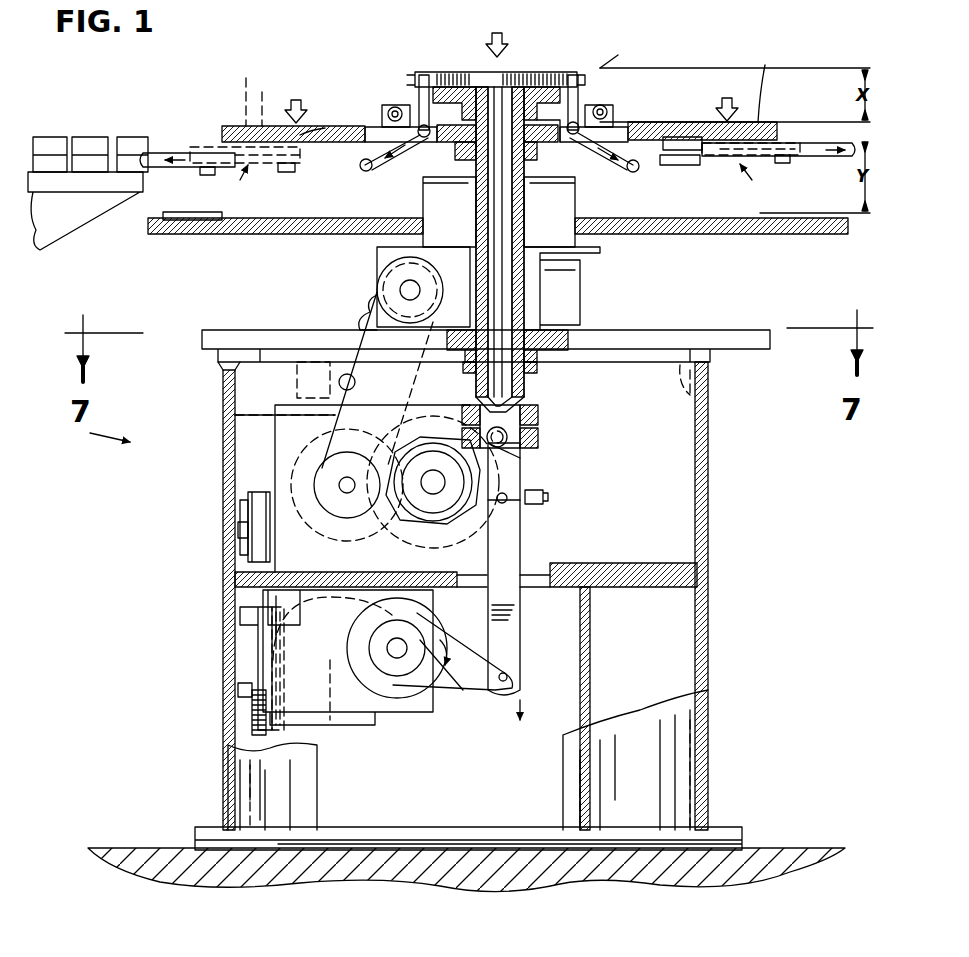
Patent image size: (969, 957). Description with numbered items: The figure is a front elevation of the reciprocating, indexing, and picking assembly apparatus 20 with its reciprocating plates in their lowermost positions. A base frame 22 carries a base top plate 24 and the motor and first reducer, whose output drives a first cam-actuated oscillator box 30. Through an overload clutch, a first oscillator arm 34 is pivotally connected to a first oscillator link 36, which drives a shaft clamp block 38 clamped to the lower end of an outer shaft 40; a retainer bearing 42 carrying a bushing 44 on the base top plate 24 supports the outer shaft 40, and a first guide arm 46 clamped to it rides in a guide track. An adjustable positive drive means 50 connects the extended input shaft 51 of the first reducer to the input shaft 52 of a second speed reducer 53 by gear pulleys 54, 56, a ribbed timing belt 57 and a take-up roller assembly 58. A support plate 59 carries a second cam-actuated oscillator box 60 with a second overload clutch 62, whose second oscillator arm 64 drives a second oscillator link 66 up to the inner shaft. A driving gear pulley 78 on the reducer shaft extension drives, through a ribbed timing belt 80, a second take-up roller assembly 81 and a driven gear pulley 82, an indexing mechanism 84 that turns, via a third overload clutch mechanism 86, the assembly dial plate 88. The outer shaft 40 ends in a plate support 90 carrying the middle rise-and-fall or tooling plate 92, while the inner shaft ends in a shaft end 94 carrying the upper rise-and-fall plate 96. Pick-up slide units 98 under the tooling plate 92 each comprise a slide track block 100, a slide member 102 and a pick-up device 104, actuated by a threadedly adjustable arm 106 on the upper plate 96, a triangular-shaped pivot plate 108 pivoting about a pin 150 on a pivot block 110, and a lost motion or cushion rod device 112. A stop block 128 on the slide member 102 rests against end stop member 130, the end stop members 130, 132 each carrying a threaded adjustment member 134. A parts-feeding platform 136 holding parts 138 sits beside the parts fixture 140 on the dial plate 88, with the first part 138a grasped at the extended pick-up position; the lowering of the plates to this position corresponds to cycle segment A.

The reciprocating, indexing, and picking assembly apparatus 20 is at (90, 434).
The base frame 22 is at (222, 375).
The base top plate 24 is at (748, 345).
The first cam-actuated oscillator box 30 is at (505, 548).
The first oscillator arm 34 is at (390, 525).
The first oscillator link 36 is at (520, 470).
The shaft clamp block 38 is at (540, 430).
The outer shaft 40 is at (545, 275).
The retainer bearing 42 is at (575, 340).
The bushing 44 is at (520, 380).
The first guide arm 46 is at (470, 405).
The adjustable positive drive means 50 is at (238, 505).
The extended input shaft 51 is at (236, 522).
The input shaft 52 is at (236, 688).
The second speed reducer 53 is at (330, 725).
The gear pulley 54 is at (246, 495).
The gear pulley 56 is at (252, 725).
The ribbed timing belt 57 is at (272, 640).
The take-up roller assembly 58 is at (240, 618).
The support plate 59 is at (625, 538).
The second cam-actuated oscillator box 60 is at (428, 712).
The second overload clutch 62 is at (395, 700).
The second oscillator arm 64 is at (480, 690).
The second oscillator link 66 is at (520, 612).
The driving gear pulley 78 is at (320, 475).
The ribbed timing belt 80 is at (235, 415).
The second take-up roller assembly 81 is at (320, 380).
The driven gear pulley 82 is at (380, 300).
The indexing mechanism 84 is at (377, 262).
The third overload clutch mechanism 86 is at (612, 185).
The assembly dial plate 88 is at (838, 200).
The plate support 90 is at (540, 150).
The middle rise-and-fall or tooling plate 92 is at (760, 83).
The shaft end 94 is at (560, 75).
The upper rise-and-fall plate 96 is at (525, 72).
The pick-up slide unit 98 is at (500, 185).
The slide track block 100 is at (312, 126).
The slide member 102 is at (205, 147).
The pick-up device 104 is at (185, 153).
The threadedly adjustable arm 106 is at (619, 55).
The triangular-shaped pivot plate 108 is at (378, 168).
The pivot block 110 is at (418, 110).
The lost motion or cushion rod device 112 is at (673, 168).
The stop block 128 is at (274, 99).
The end stop member 130 is at (243, 87).
The end stop member 132 is at (320, 126).
The threaded adjustment member 134 is at (235, 170).
The parts-feeding platform 136 is at (95, 190).
The parts 138 is at (52, 137).
The first part 138a is at (128, 137).
The parts fixture 140 is at (200, 212).
The pin 150 is at (393, 105).
The segment A is at (160, 138).